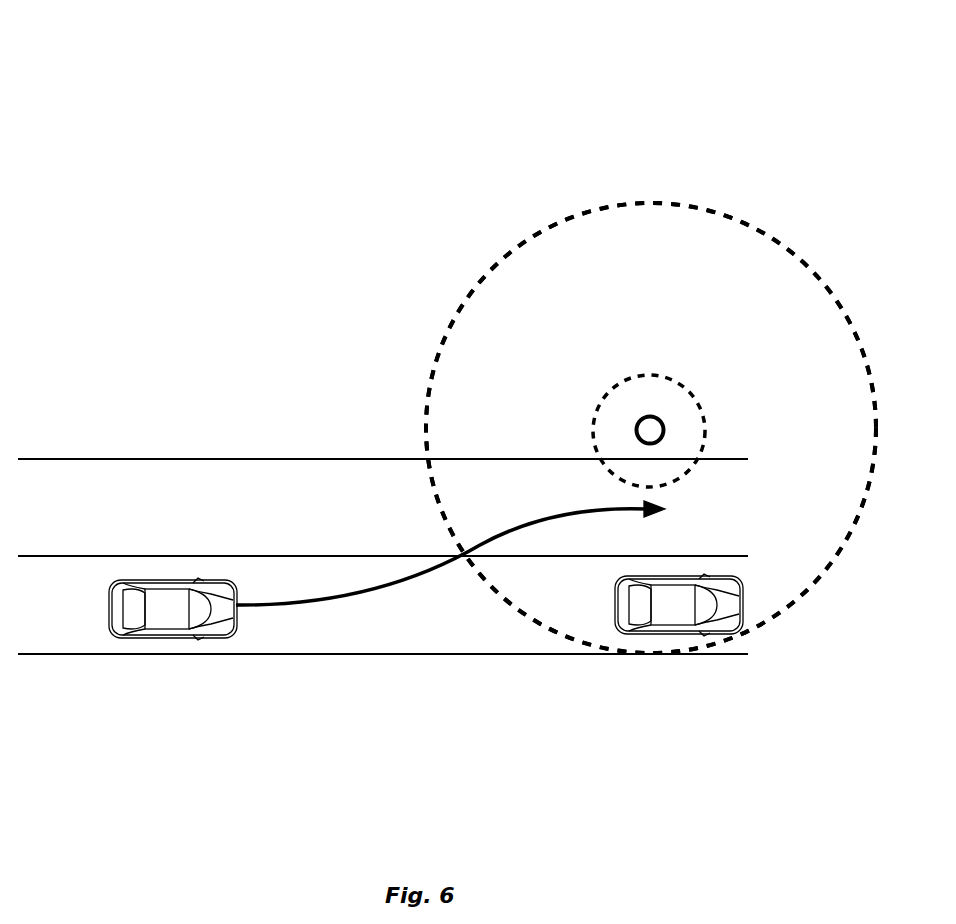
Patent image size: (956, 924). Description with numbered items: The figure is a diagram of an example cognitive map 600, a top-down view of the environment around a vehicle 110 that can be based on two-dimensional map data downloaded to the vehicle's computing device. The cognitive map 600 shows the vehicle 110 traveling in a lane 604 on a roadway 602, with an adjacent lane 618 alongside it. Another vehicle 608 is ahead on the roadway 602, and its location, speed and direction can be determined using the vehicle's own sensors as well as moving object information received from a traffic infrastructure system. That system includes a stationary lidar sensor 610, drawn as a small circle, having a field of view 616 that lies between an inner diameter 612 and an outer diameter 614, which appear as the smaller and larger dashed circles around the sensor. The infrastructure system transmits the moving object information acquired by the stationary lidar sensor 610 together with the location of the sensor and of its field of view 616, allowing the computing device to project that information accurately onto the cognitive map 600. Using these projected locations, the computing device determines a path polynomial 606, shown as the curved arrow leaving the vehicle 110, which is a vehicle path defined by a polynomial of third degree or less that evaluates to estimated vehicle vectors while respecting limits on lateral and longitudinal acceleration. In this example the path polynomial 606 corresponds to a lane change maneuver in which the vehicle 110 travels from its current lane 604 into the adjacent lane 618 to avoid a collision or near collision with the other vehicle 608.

The cognitive map 600 is at (445, 82).
The roadway 602 is at (194, 418).
The lane 604 is at (71, 618).
The adjacent lane 618 is at (71, 525).
The path polynomial 606 is at (425, 568).
The other vehicle 608 is at (678, 630).
The stationary lidar sensor 610 is at (648, 413).
The inner diameter 612 is at (598, 413).
The outer diameter 614 is at (444, 338).
The field of view 616 is at (508, 253).
The vehicle 110 is at (170, 638).